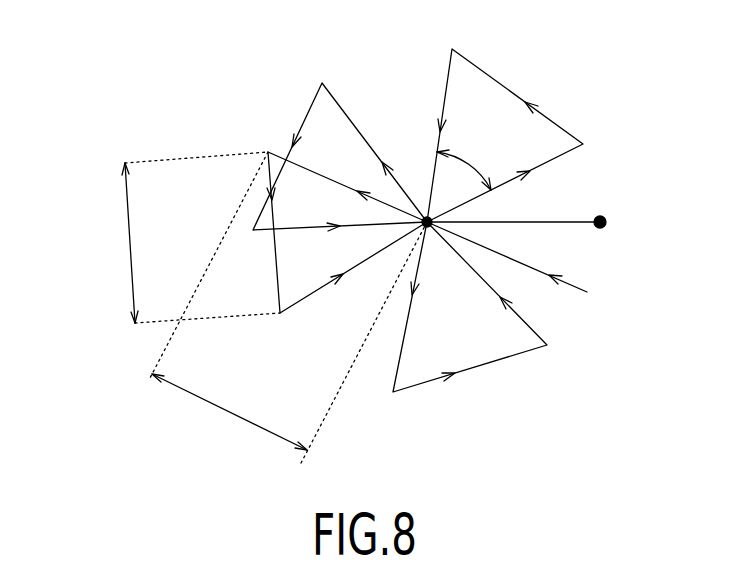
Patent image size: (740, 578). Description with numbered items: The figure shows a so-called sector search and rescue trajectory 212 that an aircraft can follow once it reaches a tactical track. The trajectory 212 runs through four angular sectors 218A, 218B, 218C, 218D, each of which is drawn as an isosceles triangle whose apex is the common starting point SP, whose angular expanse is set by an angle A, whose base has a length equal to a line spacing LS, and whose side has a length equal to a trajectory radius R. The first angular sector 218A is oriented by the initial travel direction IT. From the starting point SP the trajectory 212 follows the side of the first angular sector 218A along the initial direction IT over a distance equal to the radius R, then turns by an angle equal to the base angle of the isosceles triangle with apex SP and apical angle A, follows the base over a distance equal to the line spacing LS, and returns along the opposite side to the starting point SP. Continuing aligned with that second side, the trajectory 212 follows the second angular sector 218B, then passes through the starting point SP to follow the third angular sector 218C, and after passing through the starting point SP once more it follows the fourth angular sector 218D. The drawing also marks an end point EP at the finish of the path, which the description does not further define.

The search and rescue trajectory 212 is at (141, 349).
The first angular sector 218A is at (320, 288).
The second angular sector 218B is at (557, 158).
The third angular sector 218C is at (503, 360).
The fourth angular sector 218D is at (352, 121).
The starting point SP is at (429, 230).
The end point EP is at (607, 226).
The initial travel direction IT is at (507, 269).
The angle A is at (464, 156).
The line spacing LS is at (117, 243).
The trajectory radius R is at (229, 412).